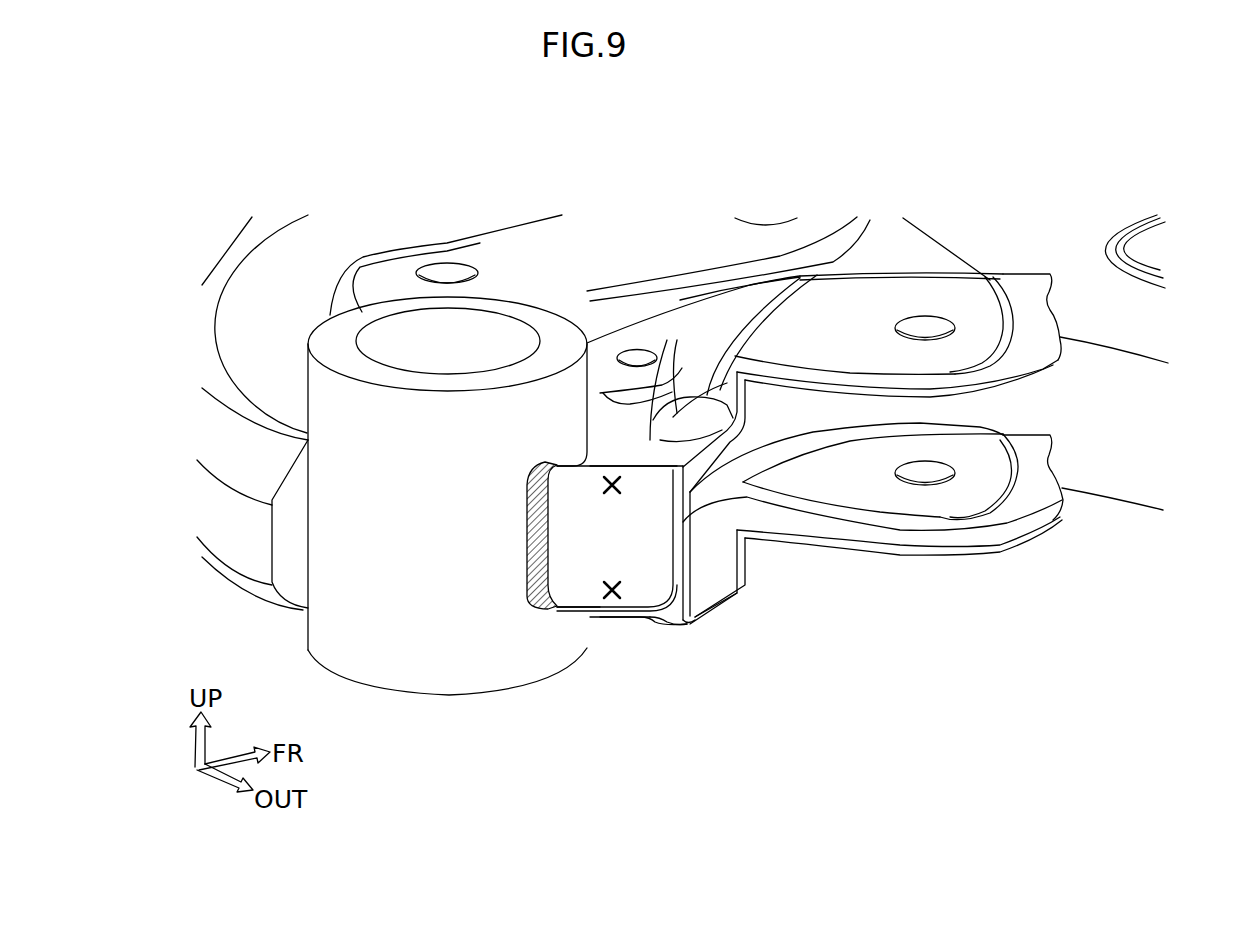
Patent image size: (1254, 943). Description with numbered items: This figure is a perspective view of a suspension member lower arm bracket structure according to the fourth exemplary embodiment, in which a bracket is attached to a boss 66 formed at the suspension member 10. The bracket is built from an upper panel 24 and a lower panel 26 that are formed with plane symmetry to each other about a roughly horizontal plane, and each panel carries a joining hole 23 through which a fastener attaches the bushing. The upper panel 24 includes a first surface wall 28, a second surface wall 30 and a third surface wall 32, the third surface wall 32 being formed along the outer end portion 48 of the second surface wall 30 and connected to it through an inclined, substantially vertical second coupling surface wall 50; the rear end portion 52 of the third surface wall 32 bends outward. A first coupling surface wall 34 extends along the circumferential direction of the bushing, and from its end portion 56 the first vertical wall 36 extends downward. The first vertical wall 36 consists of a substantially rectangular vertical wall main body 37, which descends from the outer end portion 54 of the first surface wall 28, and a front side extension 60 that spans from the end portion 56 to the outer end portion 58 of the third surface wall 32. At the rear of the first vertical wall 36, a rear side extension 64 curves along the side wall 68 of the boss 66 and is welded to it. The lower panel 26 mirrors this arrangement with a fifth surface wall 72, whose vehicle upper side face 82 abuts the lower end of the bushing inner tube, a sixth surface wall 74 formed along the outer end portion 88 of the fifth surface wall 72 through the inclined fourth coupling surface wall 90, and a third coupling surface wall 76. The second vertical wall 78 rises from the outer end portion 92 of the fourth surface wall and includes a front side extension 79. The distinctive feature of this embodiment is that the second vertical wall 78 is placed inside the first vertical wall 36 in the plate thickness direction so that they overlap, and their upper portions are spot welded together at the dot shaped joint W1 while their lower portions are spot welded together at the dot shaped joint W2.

The suspension member 10 is at (523, 270).
The joining hole 23 is at (920, 322).
The upper panel 24 is at (1030, 270).
The lower panel 26 is at (1003, 552).
The first surface wall 28 is at (603, 407).
The second surface wall 30 is at (838, 353).
The third surface wall 32 is at (777, 367).
The first coupling surface wall 34 is at (714, 341).
The first vertical wall 36 is at (574, 600).
The vertical wall main body 37 is at (572, 502).
The end portion 48 is at (1003, 345).
The second coupling surface wall 50 is at (993, 280).
The end portion 52 is at (736, 355).
The end portion 54 is at (612, 450).
The end portion 56 is at (677, 370).
The end portion 58 is at (677, 401).
The front side extension 60 is at (691, 422).
The rear side extension 64 is at (562, 610).
The boss 66 is at (437, 695).
The side wall 68 is at (422, 463).
The fifth surface wall 72 is at (797, 488).
The sixth surface wall 74 is at (685, 628).
The third coupling surface wall 76 is at (675, 627).
The second vertical wall 78 is at (641, 621).
The front side extension 79 is at (708, 608).
The vehicle upper side face 82 is at (840, 503).
The end portion 88 is at (980, 503).
The fourth coupling surface wall 90 is at (1005, 492).
The end portion 92 is at (598, 617).
The dot shaped joint W1 is at (622, 486).
The dot shaped joint W2 is at (622, 585).